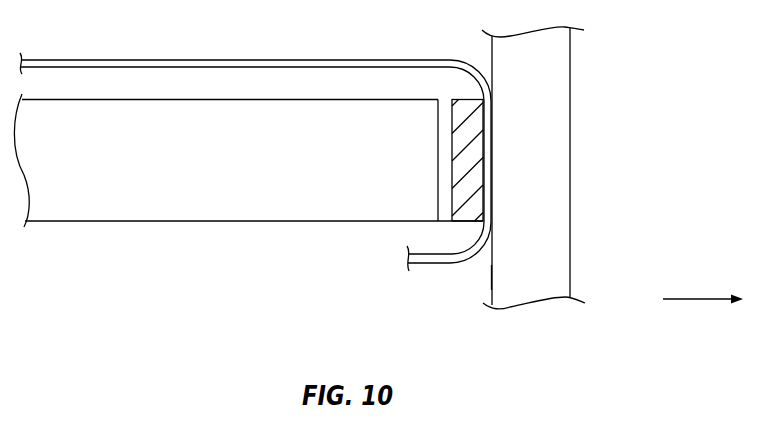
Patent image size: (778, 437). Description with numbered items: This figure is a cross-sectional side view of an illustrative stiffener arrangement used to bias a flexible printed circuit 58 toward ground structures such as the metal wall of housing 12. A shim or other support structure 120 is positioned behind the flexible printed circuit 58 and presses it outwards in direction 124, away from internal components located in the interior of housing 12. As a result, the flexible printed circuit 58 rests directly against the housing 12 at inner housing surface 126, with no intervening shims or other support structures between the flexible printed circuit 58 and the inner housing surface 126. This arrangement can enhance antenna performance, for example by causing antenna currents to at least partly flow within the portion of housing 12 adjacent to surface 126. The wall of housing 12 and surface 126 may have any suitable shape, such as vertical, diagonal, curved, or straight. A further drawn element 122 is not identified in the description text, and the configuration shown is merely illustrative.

The housing 12 is at (562, 168).
The flexible printed circuit 58 is at (262, 60).
The support structure 120 is at (452, 205).
The display/body component 122 is at (149, 212).
The direction 124 is at (702, 300).
The inner housing surface 126 is at (492, 278).